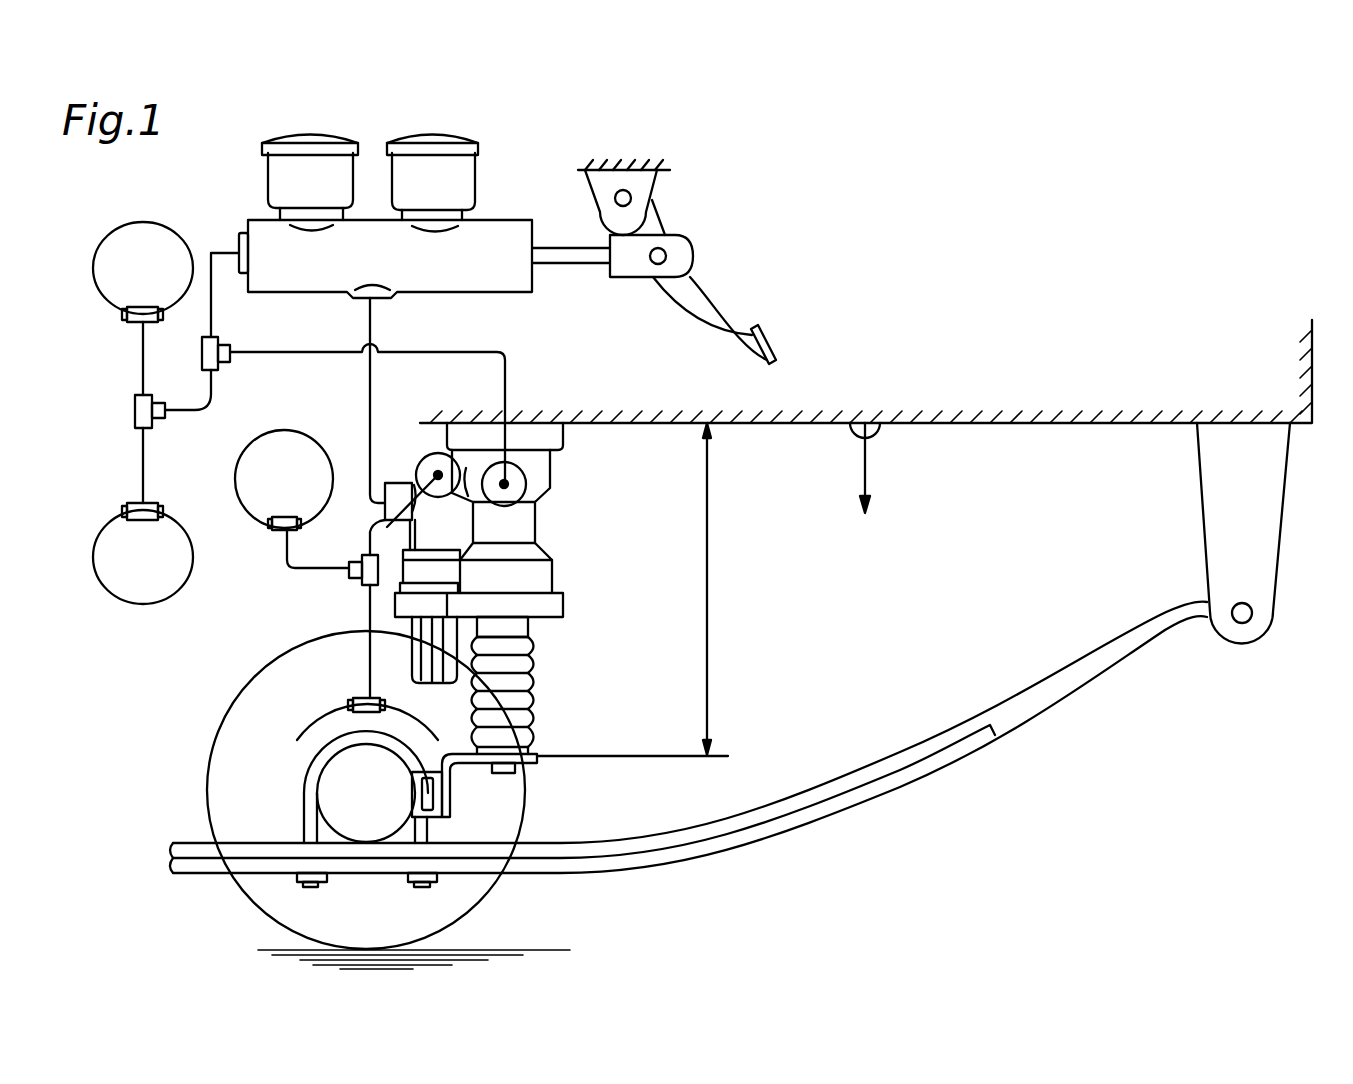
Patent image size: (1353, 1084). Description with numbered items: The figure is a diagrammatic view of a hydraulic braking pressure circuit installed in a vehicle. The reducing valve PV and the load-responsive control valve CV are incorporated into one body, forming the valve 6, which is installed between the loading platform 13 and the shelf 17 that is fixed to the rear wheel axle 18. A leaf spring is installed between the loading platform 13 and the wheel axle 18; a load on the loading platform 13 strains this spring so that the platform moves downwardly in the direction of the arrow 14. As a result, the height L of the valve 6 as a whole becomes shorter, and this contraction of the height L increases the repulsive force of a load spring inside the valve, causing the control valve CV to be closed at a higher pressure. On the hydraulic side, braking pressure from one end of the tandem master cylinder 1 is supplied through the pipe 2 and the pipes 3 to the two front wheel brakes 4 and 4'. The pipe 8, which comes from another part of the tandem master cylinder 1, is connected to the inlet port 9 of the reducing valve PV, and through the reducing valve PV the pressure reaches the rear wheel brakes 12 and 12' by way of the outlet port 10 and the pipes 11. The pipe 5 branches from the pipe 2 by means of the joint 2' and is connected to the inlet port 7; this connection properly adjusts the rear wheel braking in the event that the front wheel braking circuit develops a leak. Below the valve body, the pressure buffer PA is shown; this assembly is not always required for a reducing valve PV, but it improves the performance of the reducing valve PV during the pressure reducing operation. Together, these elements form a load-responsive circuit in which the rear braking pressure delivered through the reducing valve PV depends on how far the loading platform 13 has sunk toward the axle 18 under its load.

The tandem master cylinder 1 is at (502, 232).
The pipe 2 is at (206, 259).
The joint 2' is at (245, 340).
The pipes 3 is at (140, 453).
The front wheel brake 4 is at (133, 290).
The front wheel brake 4' is at (133, 537).
The pipe 5 is at (427, 352).
The valve 6 is at (518, 517).
The inlet port 7 is at (517, 478).
The pipe 8 is at (370, 413).
The inlet port 9 is at (384, 503).
The outlet port 10 is at (433, 462).
The pipes 11 is at (367, 604).
The rear wheel brake 12 is at (281, 499).
The rear wheel brake 12' is at (335, 689).
The loading platform 13 is at (962, 425).
The arrow 14 is at (868, 470).
The shelf 17 is at (537, 760).
The rear wheel axle 18 is at (333, 808).
The reducing valve PV is at (428, 530).
The load-responsive control valve CV is at (520, 587).
The pressure buffer PA is at (415, 630).
The height L is at (648, 589).